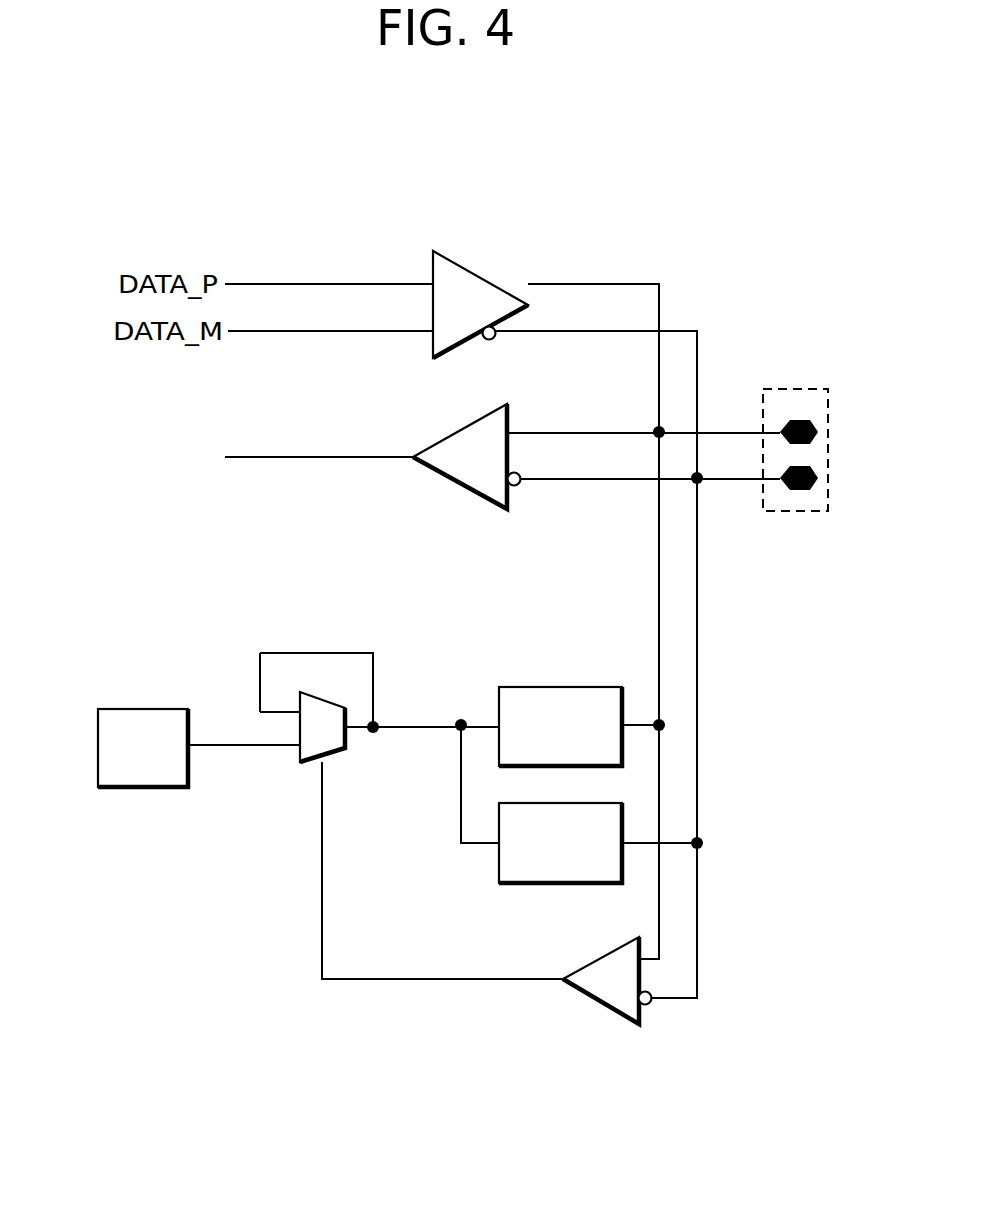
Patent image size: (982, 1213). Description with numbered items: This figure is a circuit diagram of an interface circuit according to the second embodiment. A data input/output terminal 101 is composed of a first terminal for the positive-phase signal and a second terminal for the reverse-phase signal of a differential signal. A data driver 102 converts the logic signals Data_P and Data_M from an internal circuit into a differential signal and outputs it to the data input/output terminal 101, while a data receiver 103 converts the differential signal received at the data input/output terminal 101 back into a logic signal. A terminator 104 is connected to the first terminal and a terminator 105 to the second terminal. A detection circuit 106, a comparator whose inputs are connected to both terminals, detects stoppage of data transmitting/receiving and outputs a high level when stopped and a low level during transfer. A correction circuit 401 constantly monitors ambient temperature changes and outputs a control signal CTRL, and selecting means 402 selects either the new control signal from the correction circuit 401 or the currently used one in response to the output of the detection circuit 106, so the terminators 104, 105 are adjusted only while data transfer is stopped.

The data input/output terminal 101 is at (808, 388).
The data driver 102 is at (468, 268).
The data receiver 103 is at (458, 485).
The terminator 104 is at (565, 686).
The terminator 105 is at (535, 885).
The detection circuit 106 is at (600, 1003).
The correction circuit 401 is at (143, 708).
The selecting means 402 is at (300, 765).